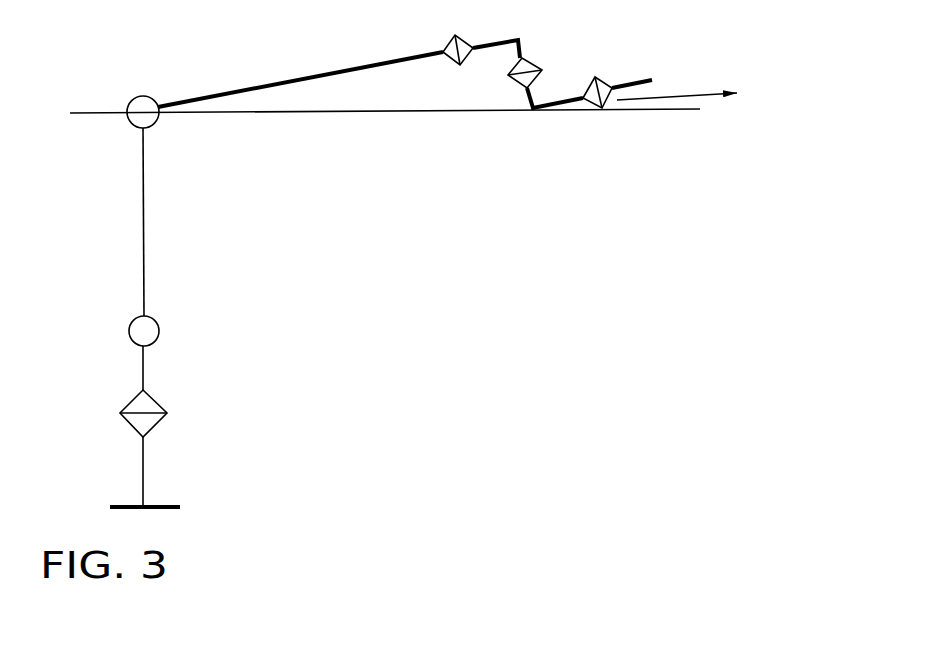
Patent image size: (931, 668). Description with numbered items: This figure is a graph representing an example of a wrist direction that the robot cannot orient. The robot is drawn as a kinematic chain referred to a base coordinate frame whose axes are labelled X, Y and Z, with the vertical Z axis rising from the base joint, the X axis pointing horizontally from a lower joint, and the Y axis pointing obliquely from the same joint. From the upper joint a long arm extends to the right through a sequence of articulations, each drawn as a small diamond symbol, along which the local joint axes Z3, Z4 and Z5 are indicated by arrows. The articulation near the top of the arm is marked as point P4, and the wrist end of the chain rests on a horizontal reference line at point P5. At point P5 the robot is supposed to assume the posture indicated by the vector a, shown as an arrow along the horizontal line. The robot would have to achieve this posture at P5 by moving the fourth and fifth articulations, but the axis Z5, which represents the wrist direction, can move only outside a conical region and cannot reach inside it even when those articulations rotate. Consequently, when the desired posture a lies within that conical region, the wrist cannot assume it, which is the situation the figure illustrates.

The X axis X is at (165, 330).
The Y axis Y is at (142, 332).
The Z axis Z is at (143, 96).
The posture vector a is at (767, 108).
The joint point P4 is at (456, 32).
The point in workspace P5 is at (540, 120).
The joint axis Z3 is at (530, 40).
The joint axis Z4 is at (537, 117).
The axis representing the wrist direction Z5 is at (660, 80).